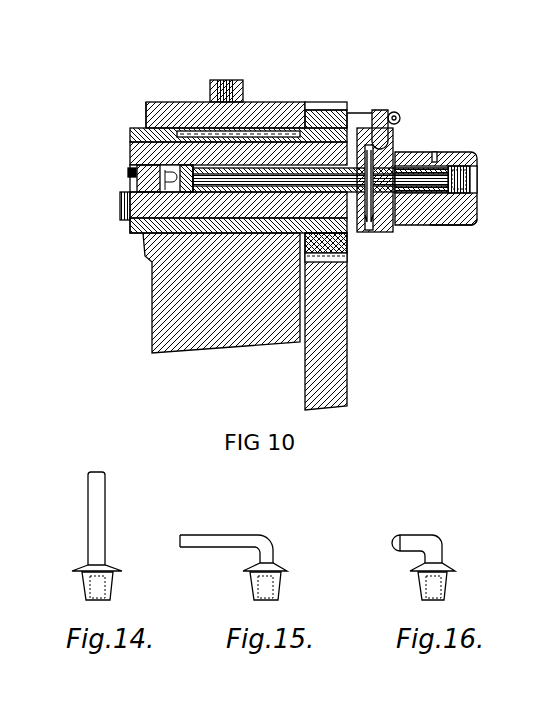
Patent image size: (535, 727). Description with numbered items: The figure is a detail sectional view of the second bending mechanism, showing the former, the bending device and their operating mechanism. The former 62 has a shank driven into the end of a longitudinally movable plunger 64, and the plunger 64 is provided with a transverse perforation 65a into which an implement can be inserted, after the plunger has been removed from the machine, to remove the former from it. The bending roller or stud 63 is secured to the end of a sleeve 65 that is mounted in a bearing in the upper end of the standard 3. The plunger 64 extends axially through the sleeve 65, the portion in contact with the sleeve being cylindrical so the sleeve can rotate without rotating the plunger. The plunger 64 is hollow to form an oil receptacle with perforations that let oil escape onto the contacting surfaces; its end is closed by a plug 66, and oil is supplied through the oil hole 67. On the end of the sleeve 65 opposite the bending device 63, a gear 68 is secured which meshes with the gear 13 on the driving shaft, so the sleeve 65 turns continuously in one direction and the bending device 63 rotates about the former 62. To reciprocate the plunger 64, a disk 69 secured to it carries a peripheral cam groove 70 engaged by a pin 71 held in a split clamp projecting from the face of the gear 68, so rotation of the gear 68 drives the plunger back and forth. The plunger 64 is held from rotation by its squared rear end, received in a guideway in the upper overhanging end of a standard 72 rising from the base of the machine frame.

The standard 3 is at (185, 346).
The gear wheel 13 is at (345, 347).
The former 62 is at (128, 170).
The bending roller or stud 63 is at (124, 212).
The plunger 64 is at (140, 186).
The sleeve 65 is at (146, 128).
The transverse perforation 65a is at (132, 234).
The plug 66 is at (470, 180).
The oil hole 67 is at (437, 160).
The gear 68 is at (320, 108).
The disk 69 is at (393, 148).
The peripheral cam groove 70 is at (366, 226).
The pin 71 is at (384, 124).
The standard 72 is at (477, 226).